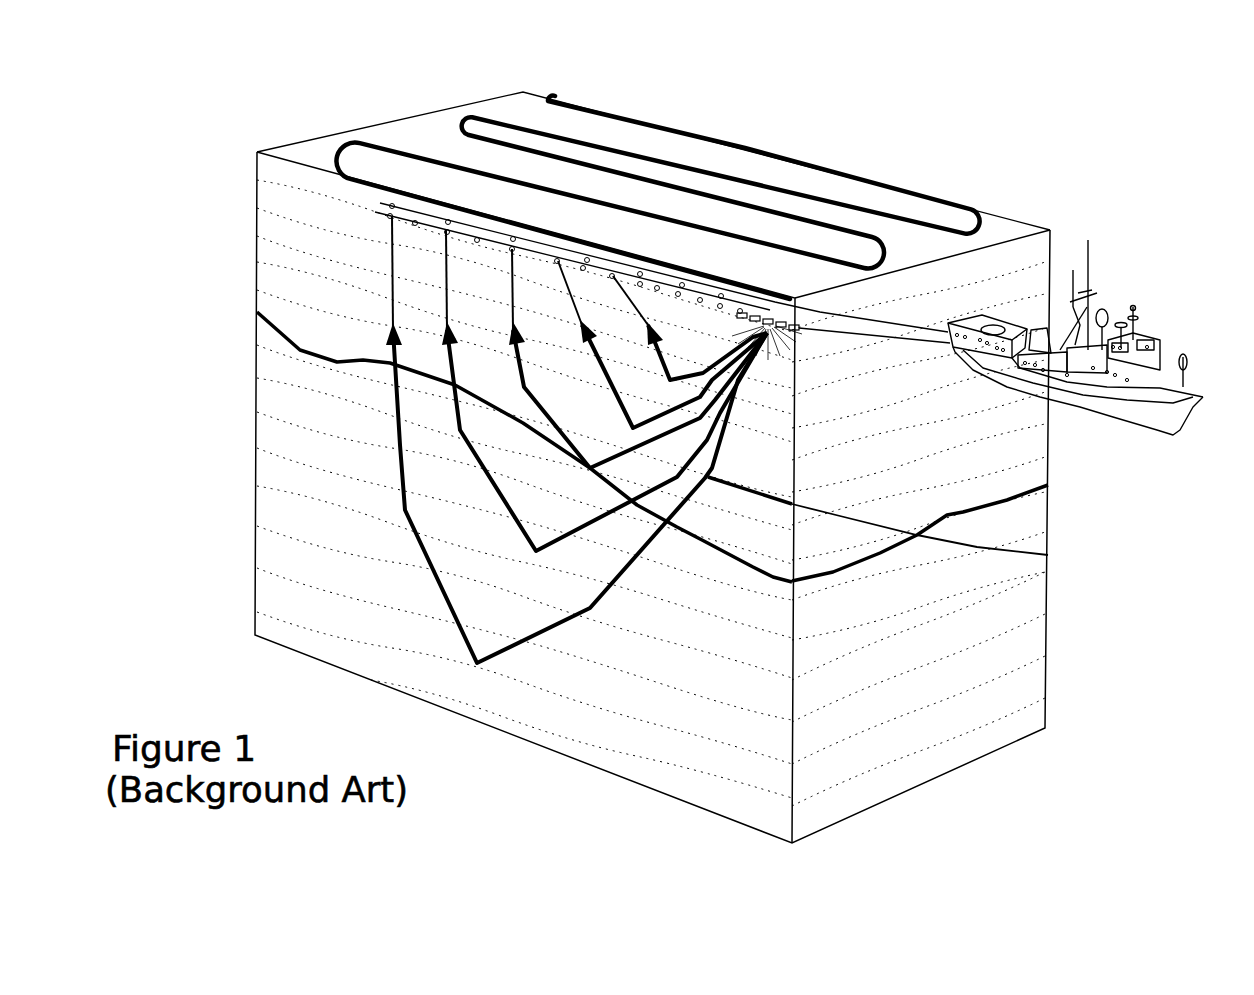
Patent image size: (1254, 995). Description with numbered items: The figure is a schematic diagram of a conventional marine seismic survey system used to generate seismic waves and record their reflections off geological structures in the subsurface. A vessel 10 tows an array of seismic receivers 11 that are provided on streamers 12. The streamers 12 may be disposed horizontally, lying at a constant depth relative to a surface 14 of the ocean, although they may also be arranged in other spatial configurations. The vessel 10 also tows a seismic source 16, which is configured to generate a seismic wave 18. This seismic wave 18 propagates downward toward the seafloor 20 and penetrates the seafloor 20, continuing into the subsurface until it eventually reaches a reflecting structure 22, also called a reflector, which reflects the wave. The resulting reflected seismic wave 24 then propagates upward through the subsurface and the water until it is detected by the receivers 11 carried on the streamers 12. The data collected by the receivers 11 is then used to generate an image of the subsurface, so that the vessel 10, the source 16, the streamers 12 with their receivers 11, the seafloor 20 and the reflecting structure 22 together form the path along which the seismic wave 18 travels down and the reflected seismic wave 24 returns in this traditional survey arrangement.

The vessel 10 is at (1167, 328).
The seismic receivers 11 is at (442, 228).
The streamers 12 is at (580, 236).
The surface of the ocean 14 is at (423, 132).
The seismic source 16 is at (775, 305).
The seismic wave 18 is at (1048, 555).
The seafloor 20 is at (1007, 485).
The reflecting structure 22 is at (347, 473).
The reflected seismic wave 24 is at (499, 447).